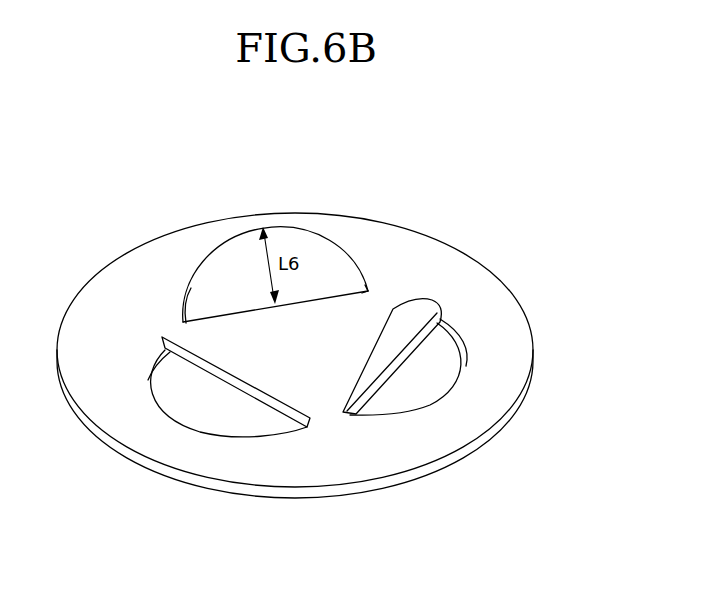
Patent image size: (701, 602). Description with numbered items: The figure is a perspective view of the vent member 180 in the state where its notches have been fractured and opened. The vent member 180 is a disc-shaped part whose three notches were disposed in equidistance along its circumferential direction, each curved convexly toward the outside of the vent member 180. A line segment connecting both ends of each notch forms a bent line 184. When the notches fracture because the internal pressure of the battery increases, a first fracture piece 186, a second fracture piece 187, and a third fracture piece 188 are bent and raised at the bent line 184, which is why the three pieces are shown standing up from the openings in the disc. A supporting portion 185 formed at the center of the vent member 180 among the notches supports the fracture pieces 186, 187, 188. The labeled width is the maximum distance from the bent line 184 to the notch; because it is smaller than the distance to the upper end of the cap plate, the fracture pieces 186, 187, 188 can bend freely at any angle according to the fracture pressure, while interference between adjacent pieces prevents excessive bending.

The vent member 180 is at (295, 368).
The bent line 184 is at (235, 312).
The supporting portion 185 is at (306, 362).
The first fracture piece 186 is at (317, 256).
The second fracture piece 187 is at (248, 390).
The third fracture piece 188 is at (412, 314).